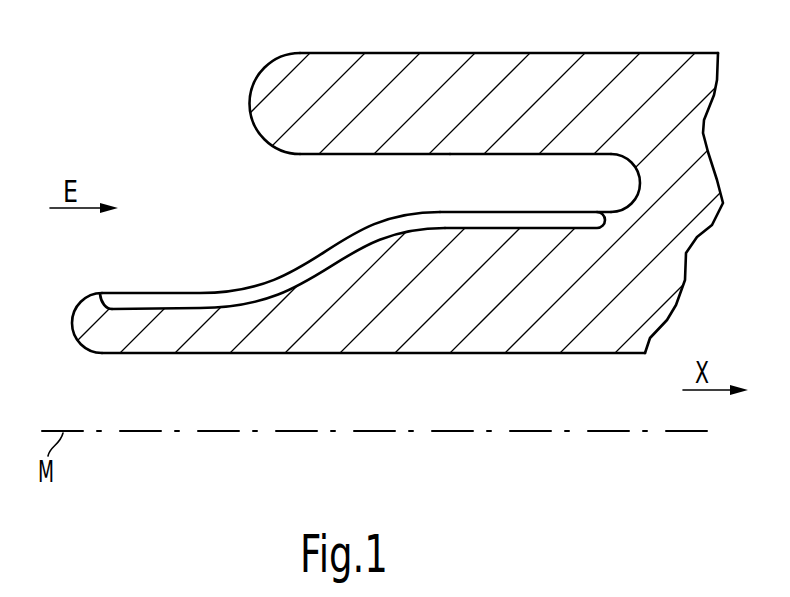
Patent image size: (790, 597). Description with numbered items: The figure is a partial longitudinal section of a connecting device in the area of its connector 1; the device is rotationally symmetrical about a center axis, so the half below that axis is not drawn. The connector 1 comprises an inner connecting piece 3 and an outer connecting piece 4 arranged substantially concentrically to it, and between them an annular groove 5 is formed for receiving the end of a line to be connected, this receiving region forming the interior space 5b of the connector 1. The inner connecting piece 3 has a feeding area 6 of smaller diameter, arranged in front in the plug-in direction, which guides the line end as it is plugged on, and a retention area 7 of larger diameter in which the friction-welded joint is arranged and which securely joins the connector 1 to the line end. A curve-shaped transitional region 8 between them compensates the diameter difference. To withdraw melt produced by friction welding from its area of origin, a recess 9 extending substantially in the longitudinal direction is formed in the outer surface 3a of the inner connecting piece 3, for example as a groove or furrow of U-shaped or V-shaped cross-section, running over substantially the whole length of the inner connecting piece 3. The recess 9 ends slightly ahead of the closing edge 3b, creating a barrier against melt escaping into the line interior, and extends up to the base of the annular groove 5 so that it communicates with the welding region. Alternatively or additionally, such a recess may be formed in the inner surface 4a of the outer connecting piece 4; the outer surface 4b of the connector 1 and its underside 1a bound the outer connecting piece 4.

The connector 1 is at (267, 97).
The underside of body 1a is at (313, 157).
The inner connecting piece 3 is at (108, 338).
The outer surface of the inner connecting piece 3a is at (552, 210).
The closing edge of the inner connecting piece 3b is at (85, 302).
The outer connecting piece 4 is at (490, 93).
The inner surface of the outer connecting piece 4a is at (458, 155).
The outer surface of the connector 4b is at (430, 53).
The annular groove 5 is at (517, 172).
The interior space 5b is at (525, 108).
The feeding area 6 is at (173, 315).
The retention area 7 is at (520, 305).
The transitional region 8 is at (292, 273).
The recess 9 is at (440, 223).